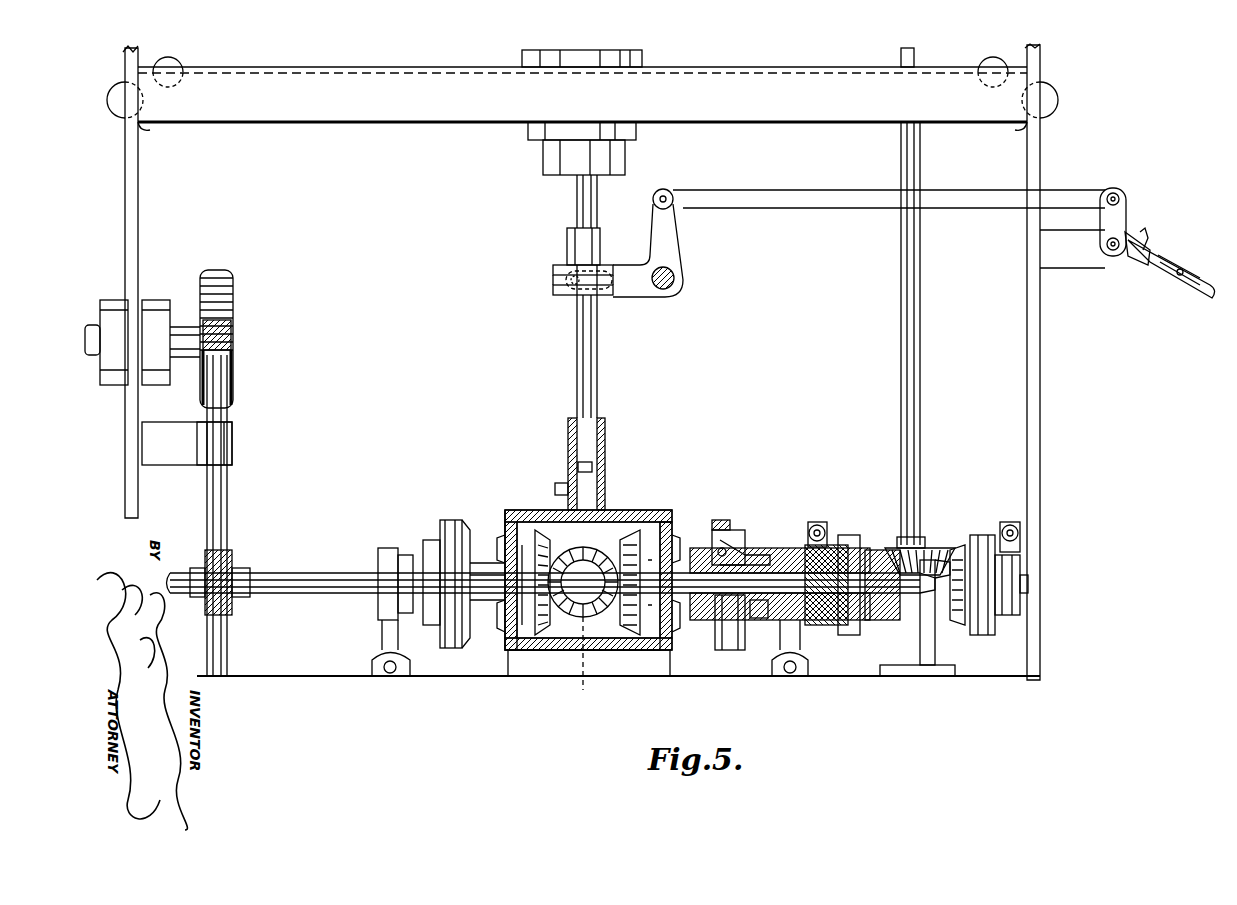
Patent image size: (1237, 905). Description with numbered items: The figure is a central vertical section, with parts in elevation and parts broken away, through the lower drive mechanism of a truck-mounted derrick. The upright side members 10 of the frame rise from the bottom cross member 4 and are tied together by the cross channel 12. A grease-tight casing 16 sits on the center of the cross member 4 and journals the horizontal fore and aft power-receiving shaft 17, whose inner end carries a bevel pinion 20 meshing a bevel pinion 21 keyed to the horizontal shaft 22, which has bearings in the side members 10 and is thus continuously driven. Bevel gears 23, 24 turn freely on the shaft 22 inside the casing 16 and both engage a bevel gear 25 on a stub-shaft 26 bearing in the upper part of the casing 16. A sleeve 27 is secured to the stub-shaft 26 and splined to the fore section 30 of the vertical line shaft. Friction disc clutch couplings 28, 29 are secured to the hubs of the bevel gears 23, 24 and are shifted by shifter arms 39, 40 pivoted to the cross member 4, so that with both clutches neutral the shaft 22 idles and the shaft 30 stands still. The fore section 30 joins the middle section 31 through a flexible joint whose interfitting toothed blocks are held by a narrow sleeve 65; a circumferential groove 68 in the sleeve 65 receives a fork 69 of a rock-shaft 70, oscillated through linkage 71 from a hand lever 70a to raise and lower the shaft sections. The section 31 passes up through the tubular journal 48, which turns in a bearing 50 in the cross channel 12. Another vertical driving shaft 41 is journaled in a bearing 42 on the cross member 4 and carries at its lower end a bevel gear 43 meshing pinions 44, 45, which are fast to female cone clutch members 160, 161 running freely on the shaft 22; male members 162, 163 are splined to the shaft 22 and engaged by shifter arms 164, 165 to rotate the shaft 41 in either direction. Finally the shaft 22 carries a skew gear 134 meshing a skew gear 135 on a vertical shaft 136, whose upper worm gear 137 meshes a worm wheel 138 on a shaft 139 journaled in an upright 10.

The bottom cross member 4 is at (288, 672).
The upright side members 10 is at (139, 214).
The cross channel 12 is at (306, 122).
The grease-tight casing 16 is at (655, 505).
The power-receiving shaft 17 is at (565, 663).
The bevel pinion 20 is at (596, 625).
The bevel pinion 21 is at (630, 635).
The horizontal shaft 22 is at (325, 595).
The bevel gear 23 is at (645, 635).
The bevel gear 24 is at (535, 638).
The bevel gear 25 is at (545, 530).
The stub-shaft 26 is at (592, 470).
The sleeve 27 is at (605, 428).
The friction disc clutch coupling 28 is at (735, 522).
The friction disc clutch coupling 29 is at (452, 520).
The fore shaft section 30 is at (597, 378).
The middle shaft section 31 is at (577, 203).
The shifter arm 39 is at (788, 540).
The shifter arm 40 is at (378, 538).
The vertical driving shaft 41 is at (901, 299).
The bearing 42 is at (925, 610).
The bevel gear 43 is at (935, 548).
The pinion 44 is at (960, 548).
The pinion 45 is at (870, 550).
The tubular journal 48 is at (625, 158).
The bearing 50 is at (528, 128).
The narrow sleeve 65 is at (567, 244).
The circumferential groove 68 is at (560, 283).
The fork 69 is at (612, 292).
The rock-shaft 70 is at (678, 285).
The hand lever 70a is at (1150, 282).
The linkage 71 is at (1055, 190).
The skew gear 134 is at (240, 552).
The skew gear 135 is at (250, 560).
The vertical shaft 136 is at (230, 487).
The worm gear 137 is at (233, 338).
The worm wheel 138 is at (233, 290).
The shaft 139 is at (180, 318).
The female cone clutch member 160 is at (985, 635).
The female cone clutch member 161 is at (852, 635).
The male cone clutch member 162 is at (1028, 583).
The male cone clutch member 163 is at (830, 625).
The shifter arm 164 is at (1012, 620).
The shifter arm 165 is at (810, 620).